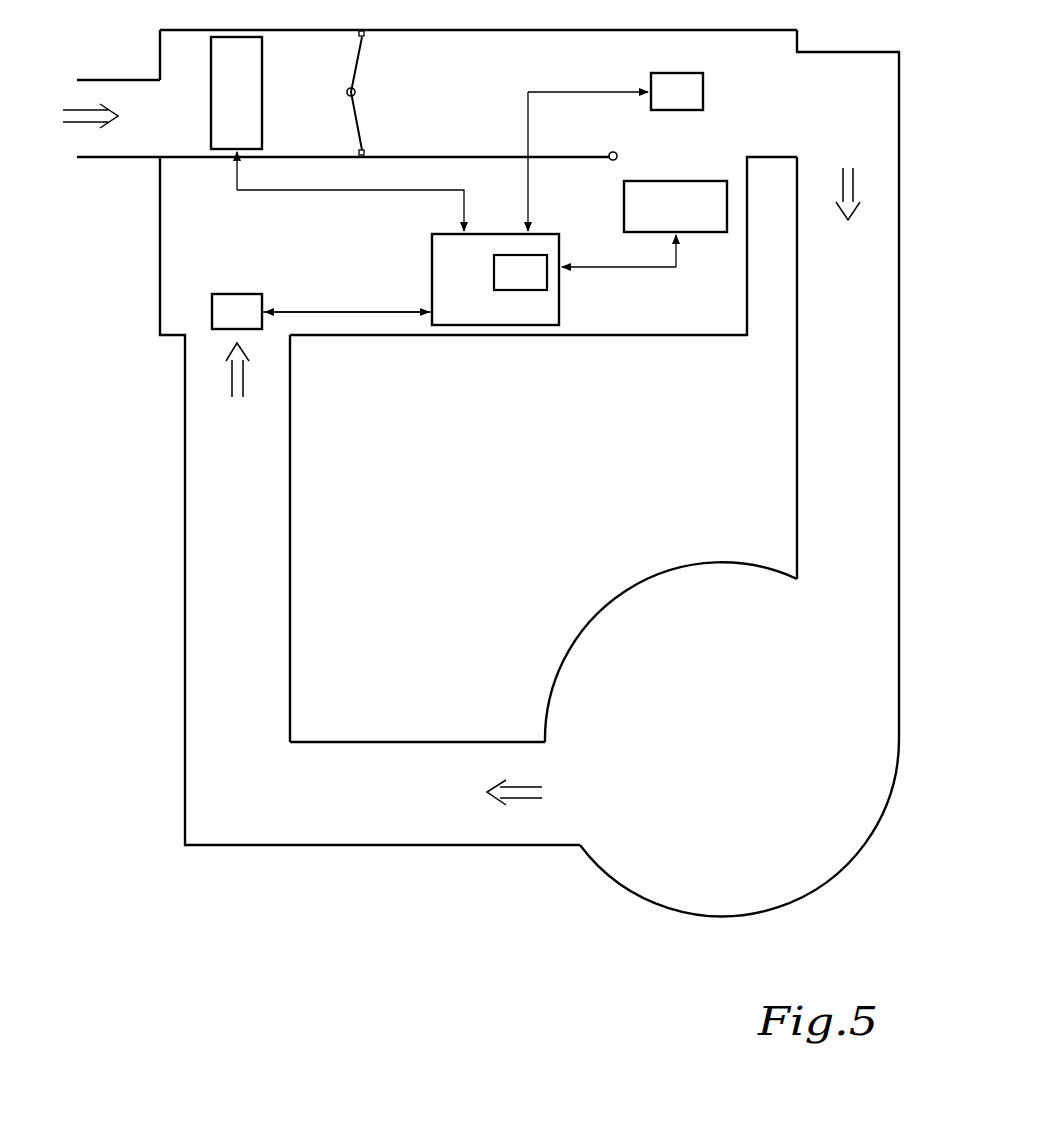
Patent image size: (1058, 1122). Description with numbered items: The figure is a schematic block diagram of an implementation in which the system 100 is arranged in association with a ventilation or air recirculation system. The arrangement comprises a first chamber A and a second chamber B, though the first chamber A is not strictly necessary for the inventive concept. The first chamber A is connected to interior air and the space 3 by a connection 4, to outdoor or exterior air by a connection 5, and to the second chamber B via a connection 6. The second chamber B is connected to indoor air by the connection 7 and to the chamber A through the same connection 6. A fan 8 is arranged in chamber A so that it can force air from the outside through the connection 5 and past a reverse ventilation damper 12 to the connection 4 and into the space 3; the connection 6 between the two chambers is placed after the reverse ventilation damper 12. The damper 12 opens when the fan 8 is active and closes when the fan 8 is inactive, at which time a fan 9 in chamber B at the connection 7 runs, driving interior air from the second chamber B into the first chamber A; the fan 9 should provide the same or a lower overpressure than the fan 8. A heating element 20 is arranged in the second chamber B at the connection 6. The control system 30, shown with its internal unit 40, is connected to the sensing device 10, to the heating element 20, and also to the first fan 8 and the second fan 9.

The vehicle air conditioning unit (fourth embodiment) 100 is at (59, 101).
The connection 5 is at (164, 121).
The first chamber A is at (491, 76).
The second chamber B is at (385, 236).
The connection 6 is at (664, 157).
The reverse ventilation damper 12 is at (384, 88).
The fan 8 is at (238, 103).
The control system 30 is at (398, 208).
The memory / processing unit 40 is at (520, 273).
The sensing device 10 is at (684, 101).
The heating element 20 is at (683, 215).
The fan 9 is at (238, 320).
The connection 7 is at (269, 380).
The connection 4 is at (781, 100).
The space 3 is at (734, 718).